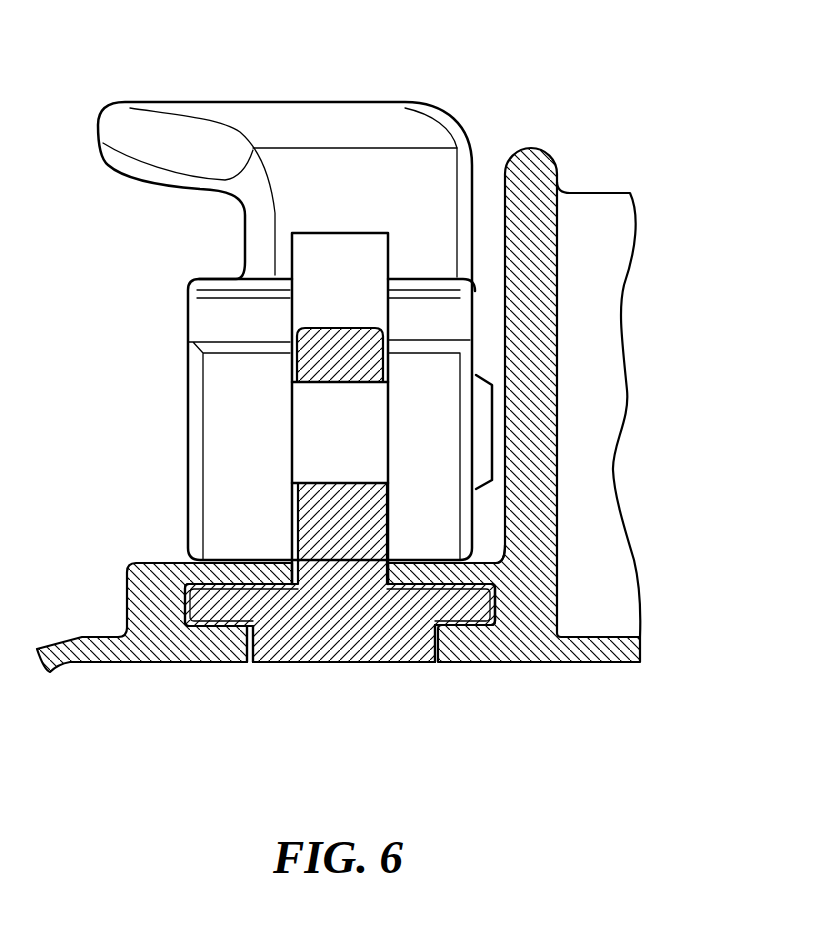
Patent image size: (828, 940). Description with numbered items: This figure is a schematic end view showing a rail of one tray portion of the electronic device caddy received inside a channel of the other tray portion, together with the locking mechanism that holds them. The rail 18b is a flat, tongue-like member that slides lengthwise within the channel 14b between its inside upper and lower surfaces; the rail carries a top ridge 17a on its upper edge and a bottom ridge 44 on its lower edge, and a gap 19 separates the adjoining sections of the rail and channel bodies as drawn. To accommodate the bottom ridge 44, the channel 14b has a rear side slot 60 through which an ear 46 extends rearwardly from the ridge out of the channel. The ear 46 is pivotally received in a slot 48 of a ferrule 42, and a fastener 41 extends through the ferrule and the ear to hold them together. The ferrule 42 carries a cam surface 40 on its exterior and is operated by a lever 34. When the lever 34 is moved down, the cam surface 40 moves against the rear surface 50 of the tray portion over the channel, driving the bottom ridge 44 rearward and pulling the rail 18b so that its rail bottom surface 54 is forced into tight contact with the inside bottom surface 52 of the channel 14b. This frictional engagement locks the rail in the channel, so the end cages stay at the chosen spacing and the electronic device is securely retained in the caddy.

The channel 14b is at (513, 607).
The top ridge 17a is at (343, 664).
The rail 18b is at (470, 613).
The gap 19 is at (250, 664).
The lever 34 is at (243, 117).
The cam surface 40 is at (222, 562).
The fastener 41 is at (355, 423).
The ferrule 42 is at (217, 397).
The bottom ridge 44 is at (333, 507).
The ear 46 is at (339, 347).
The slot 48 is at (310, 307).
The rear surface 50 is at (443, 557).
The inside bottom surface 52 is at (480, 584).
The rail bottom surface 54 is at (478, 572).
The rear side slot 60 is at (293, 560).